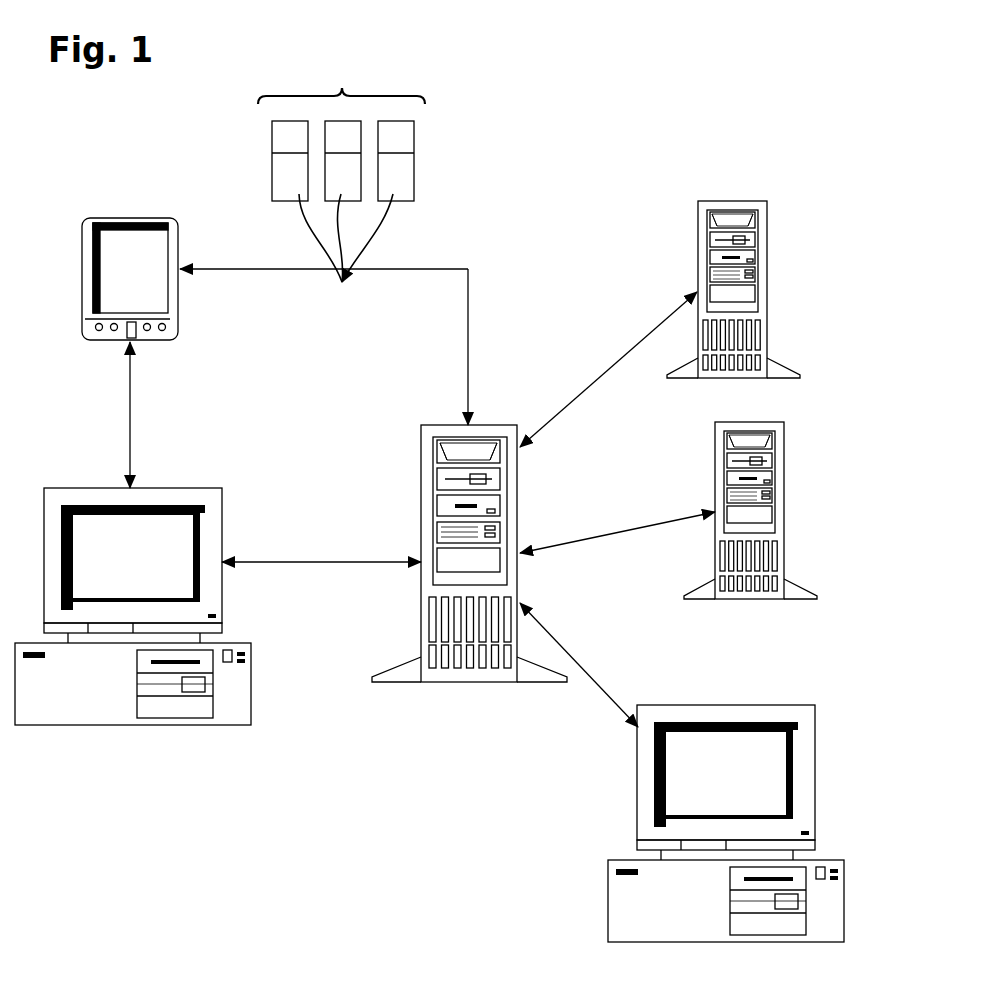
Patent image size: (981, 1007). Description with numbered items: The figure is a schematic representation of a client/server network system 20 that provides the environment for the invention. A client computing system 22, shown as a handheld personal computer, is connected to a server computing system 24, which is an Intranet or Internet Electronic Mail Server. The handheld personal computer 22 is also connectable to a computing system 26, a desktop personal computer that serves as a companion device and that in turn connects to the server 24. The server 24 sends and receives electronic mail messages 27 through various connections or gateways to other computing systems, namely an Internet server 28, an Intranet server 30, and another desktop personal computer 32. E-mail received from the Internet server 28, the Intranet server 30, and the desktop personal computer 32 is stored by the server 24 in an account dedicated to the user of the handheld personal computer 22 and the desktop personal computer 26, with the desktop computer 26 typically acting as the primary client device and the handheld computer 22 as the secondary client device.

The client/server network system 20 is at (322, 851).
The client computing system 22 is at (168, 305).
The server computing system 24 is at (425, 510).
The computing system 26 is at (242, 687).
The electronic mail messages 27 is at (341, 183).
The Internet server 28 is at (773, 523).
The Intranet server 30 is at (760, 301).
The desktop personal computer 32 is at (615, 918).